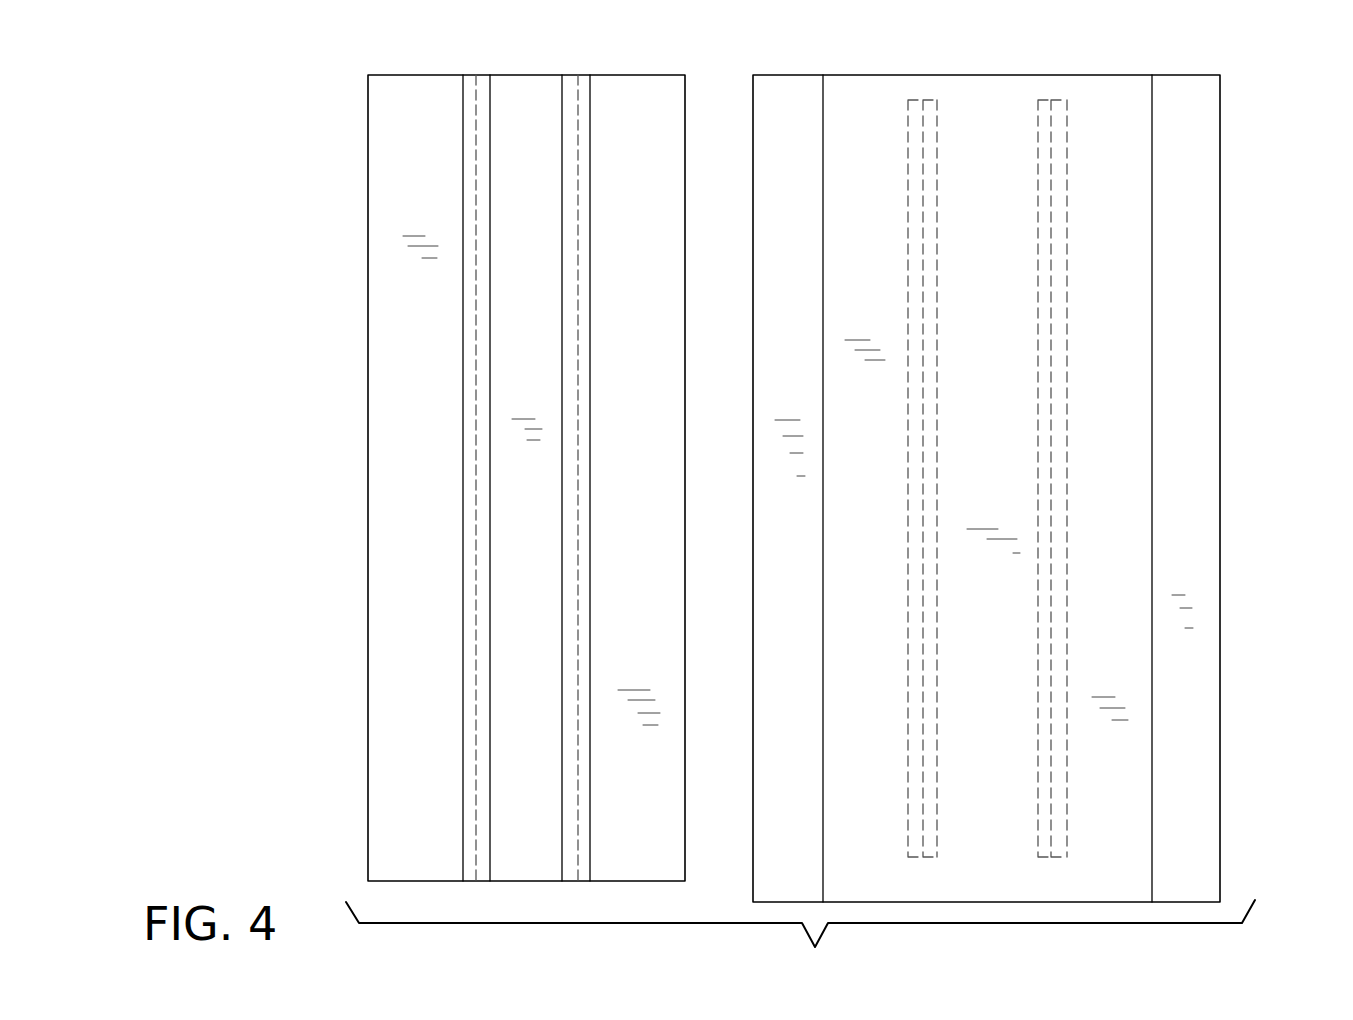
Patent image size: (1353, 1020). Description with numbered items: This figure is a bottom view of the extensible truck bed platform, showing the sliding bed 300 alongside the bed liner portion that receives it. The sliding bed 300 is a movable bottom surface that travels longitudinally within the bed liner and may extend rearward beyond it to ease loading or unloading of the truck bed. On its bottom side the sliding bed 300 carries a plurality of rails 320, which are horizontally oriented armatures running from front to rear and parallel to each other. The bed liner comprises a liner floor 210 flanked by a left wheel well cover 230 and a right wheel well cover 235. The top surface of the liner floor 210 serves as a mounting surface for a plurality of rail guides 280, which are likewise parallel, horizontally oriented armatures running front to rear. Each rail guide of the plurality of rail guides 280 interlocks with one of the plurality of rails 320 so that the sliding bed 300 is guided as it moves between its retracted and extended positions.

The liner floor 210 is at (990, 92).
The right wheel well cover 235 is at (785, 92).
The left wheel well cover 230 is at (1197, 168).
The plurality of rail guides 280 is at (928, 513).
The sliding bed 300 is at (408, 465).
The plurality of rails 320 is at (577, 567).